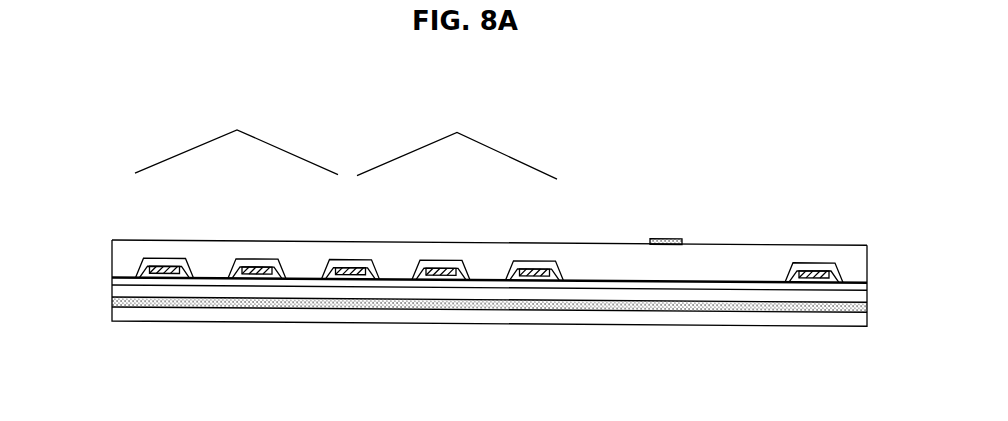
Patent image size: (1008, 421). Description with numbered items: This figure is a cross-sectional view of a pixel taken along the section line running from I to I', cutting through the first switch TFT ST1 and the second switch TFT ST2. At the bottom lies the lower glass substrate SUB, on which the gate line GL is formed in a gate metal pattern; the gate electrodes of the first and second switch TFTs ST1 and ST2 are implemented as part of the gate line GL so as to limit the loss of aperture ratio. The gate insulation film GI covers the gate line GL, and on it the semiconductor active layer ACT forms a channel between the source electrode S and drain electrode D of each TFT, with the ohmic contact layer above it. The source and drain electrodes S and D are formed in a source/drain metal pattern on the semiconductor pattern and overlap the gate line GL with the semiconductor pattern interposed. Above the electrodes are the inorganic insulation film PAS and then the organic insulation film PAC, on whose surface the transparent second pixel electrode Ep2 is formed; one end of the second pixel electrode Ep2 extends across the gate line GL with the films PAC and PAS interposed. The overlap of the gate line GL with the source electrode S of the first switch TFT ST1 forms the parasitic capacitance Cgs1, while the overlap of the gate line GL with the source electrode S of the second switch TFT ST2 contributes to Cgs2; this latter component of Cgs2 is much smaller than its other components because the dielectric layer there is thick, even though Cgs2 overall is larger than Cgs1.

The first switch TFT ST1 is at (236, 141).
The second switch TFT ST2 is at (457, 144).
The drain electrode D is at (153, 264).
The source electrode S is at (256, 265).
The second pixel electrode Ep2 is at (666, 234).
The gate-source parasitic capacitance of the first switch TFT Cgs1 is at (256, 274).
The gate-source parasitic capacitance of the second switch TFT Cgs2 is at (439, 274).
The organic insulation film PAC is at (112, 251).
The inorganic insulation film PAS is at (112, 280).
The gate insulation film GI is at (112, 288).
The gate line GL is at (112, 302).
The lower glass substrate SUB is at (112, 318).
The semiconductor active layer ACT is at (205, 283).
The section line end I is at (109, 335).
The section line end I' is at (870, 340).